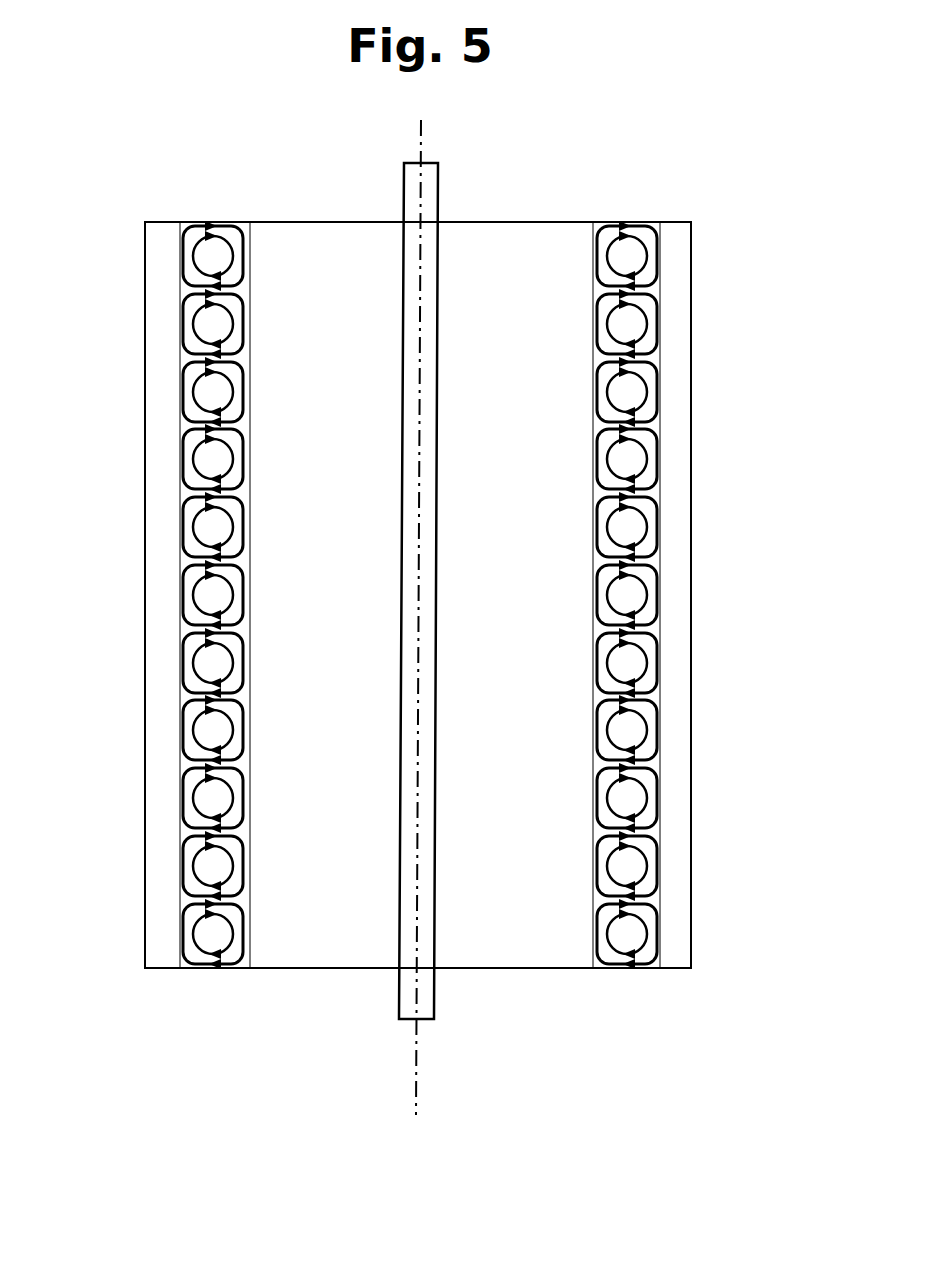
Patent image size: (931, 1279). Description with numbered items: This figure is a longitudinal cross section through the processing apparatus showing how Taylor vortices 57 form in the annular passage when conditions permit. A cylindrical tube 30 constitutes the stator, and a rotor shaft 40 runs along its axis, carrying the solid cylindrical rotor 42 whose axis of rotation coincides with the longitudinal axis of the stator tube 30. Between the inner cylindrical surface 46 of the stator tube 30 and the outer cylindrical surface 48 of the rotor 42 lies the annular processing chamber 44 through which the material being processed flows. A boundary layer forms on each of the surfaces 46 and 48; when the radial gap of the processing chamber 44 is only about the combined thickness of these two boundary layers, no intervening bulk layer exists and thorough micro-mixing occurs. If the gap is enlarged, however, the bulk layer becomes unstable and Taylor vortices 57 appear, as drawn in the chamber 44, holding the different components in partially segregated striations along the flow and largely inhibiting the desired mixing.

The cylindrical tube 30 is at (672, 970).
The rotor shaft 40 is at (438, 188).
The cylindrical rotor 42 is at (336, 250).
The processing chamber 44 is at (193, 968).
The inner cylindrical surface 46 is at (140, 595).
The outer cylindrical surface 48 is at (245, 673).
The Taylor vortices 57 is at (632, 605).